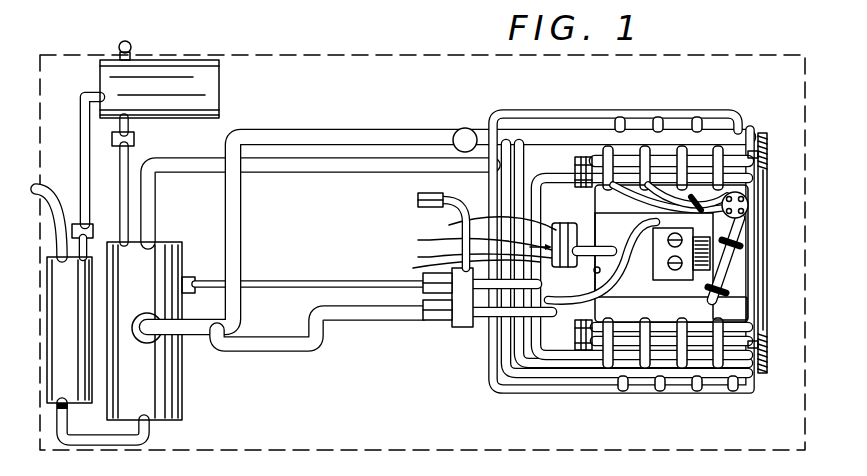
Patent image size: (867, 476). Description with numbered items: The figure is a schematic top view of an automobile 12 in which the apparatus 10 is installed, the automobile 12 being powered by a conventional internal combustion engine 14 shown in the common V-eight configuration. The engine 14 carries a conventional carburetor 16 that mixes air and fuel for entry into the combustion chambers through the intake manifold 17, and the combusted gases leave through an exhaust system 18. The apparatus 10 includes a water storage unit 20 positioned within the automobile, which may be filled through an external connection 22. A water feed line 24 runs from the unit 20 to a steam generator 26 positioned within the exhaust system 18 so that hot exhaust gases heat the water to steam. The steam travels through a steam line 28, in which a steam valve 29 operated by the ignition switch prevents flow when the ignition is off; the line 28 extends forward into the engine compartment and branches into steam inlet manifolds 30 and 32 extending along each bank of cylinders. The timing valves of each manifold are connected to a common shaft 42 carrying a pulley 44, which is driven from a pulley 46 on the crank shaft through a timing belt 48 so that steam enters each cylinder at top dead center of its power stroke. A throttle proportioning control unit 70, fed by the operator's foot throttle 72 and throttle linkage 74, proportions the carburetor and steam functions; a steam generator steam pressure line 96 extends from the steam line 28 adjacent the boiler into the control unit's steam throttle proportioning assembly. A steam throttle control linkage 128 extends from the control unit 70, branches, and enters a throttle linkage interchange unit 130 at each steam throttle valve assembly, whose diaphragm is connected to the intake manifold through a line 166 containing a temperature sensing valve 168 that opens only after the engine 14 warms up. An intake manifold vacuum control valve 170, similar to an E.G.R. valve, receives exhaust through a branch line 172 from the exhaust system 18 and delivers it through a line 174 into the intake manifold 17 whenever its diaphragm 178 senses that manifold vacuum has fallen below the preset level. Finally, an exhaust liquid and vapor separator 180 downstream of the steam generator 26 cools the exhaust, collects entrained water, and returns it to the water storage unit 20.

The apparatus 10 is at (408, 396).
The automobile 12 is at (281, 54).
The internal combustion engine 14 is at (752, 312).
The carburetor 16 is at (732, 308).
The intake manifold 17 is at (671, 253).
The exhaust system 18 is at (299, 173).
The water storage unit 20 is at (220, 97).
The external connection 22 is at (131, 45).
The water feed line 24 is at (120, 153).
The steam generator 26 is at (183, 397).
The steam line 28 is at (227, 212).
The steam valve 29 is at (458, 130).
The steam inlet manifold 30 is at (745, 127).
The steam inlet manifold 32 is at (747, 392).
The common shaft 42 is at (750, 382).
The pulley 44 is at (768, 152).
The crank shaft pulley 46 is at (768, 290).
The timing belt 48 is at (768, 205).
The throttle proportioning control unit 70 is at (420, 320).
The foot throttle 72 is at (417, 200).
The throttle linkage 74 is at (423, 214).
The steam generator steam pressure line 96 is at (280, 334).
The steam throttle control linkage 128 is at (602, 258).
The throttle linkage interchange unit 130 is at (574, 163).
The line 166 is at (594, 288).
The temperature sensing valve 168 is at (617, 282).
The intake manifold vacuum control valve 170 is at (401, 250).
The branch line 172 is at (468, 328).
The line 174 is at (497, 251).
The diaphragm 178 is at (488, 226).
The exhaust liquid and vapor separator 180 is at (74, 397).